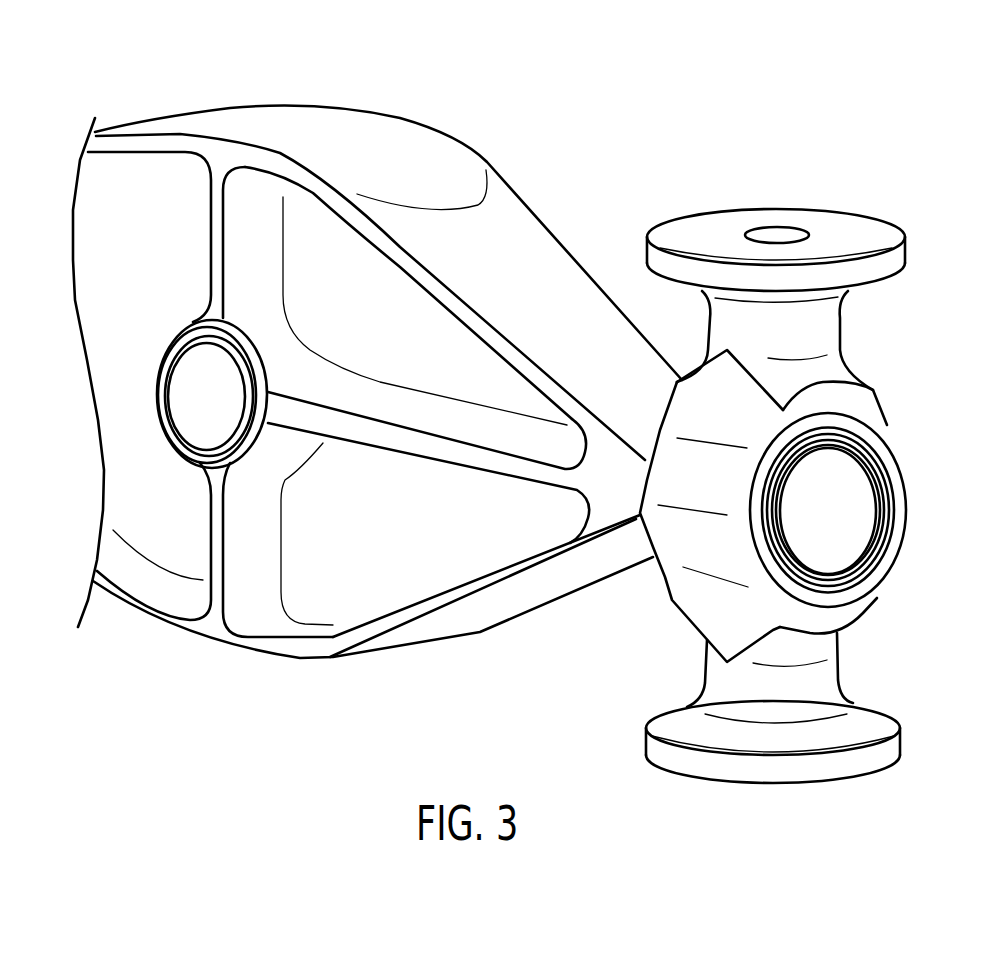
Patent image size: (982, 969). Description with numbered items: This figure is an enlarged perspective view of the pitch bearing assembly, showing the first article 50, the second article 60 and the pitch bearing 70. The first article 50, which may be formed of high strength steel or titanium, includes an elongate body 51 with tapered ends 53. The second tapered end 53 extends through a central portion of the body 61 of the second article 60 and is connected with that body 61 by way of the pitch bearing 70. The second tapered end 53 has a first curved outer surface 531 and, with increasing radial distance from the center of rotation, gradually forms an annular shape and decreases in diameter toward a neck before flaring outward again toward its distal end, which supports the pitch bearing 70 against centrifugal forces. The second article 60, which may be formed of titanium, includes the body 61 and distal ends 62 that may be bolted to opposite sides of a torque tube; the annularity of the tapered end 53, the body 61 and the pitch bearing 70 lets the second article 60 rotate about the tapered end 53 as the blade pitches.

The first article 50 is at (230, 122).
The body 51 is at (407, 280).
The first curved outer surface 531 is at (580, 262).
The tapered end 53 is at (612, 505).
The second article 60 is at (690, 213).
The body 61 is at (684, 568).
The distal ends 62 is at (682, 760).
The pitch bearing 70 is at (908, 468).